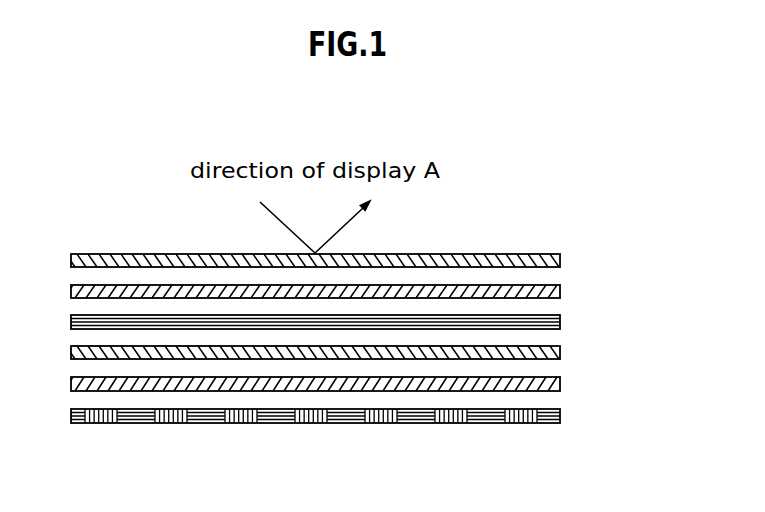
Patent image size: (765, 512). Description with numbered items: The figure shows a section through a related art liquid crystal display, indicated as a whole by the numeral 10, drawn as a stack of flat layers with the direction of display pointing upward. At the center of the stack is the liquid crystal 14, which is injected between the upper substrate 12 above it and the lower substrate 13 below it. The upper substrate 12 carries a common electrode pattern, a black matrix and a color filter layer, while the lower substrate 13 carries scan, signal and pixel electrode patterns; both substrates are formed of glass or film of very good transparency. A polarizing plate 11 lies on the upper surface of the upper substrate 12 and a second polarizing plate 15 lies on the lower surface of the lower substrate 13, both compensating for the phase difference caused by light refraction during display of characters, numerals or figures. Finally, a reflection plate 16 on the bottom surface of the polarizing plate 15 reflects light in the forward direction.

The display device 10 is at (490, 228).
The polarizing plate 11 is at (561, 258).
The upper substrate 12 is at (561, 289).
The liquid crystal 14 is at (561, 320).
The lower substrate 13 is at (561, 352).
The polarizing plate 15 is at (561, 382).
The reflection plate 16 is at (561, 412).